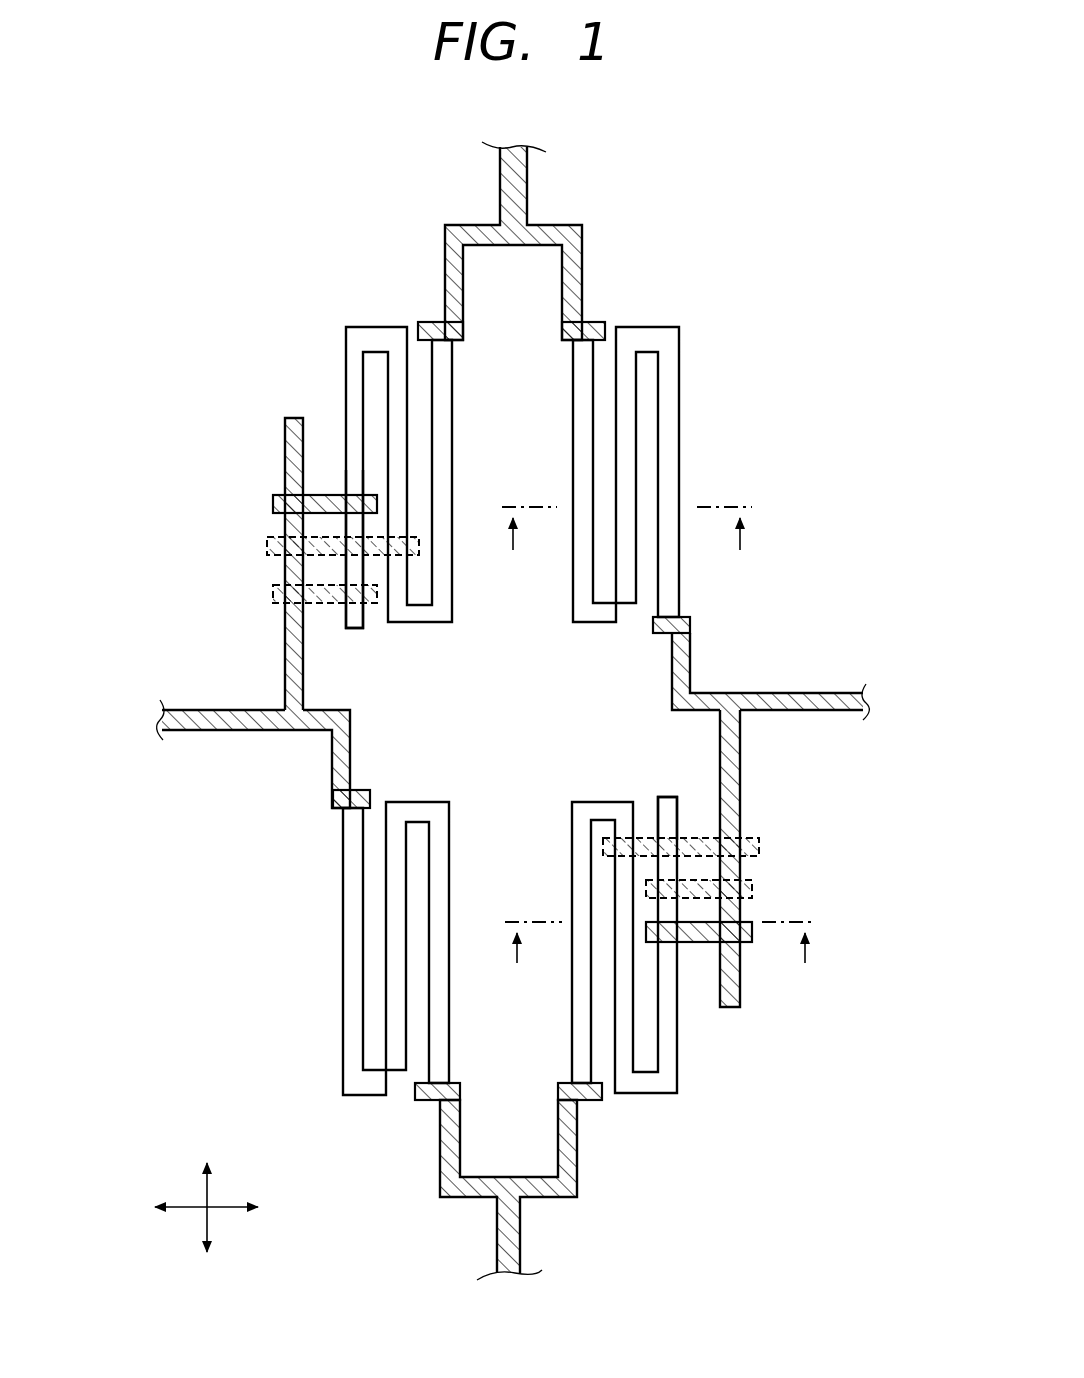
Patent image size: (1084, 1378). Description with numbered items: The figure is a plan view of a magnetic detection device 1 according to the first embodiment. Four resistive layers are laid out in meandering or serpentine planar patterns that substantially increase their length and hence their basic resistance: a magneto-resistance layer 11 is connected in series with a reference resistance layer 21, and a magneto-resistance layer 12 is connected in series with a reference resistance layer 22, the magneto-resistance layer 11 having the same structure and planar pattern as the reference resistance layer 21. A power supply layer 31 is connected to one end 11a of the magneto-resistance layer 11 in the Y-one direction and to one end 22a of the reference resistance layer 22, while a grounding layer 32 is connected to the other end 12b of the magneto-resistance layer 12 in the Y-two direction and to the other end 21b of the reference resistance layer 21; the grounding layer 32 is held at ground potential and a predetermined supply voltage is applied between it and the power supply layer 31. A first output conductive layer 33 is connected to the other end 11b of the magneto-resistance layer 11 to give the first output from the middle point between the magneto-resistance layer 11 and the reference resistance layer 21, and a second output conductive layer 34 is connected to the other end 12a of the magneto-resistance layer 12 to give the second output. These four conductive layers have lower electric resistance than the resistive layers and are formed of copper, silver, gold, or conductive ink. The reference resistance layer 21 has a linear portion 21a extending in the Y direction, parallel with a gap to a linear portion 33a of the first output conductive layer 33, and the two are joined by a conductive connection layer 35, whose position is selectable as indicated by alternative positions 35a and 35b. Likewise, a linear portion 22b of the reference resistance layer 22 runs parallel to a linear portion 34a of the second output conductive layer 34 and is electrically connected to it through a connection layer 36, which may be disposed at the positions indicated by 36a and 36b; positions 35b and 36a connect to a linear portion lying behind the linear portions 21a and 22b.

The magnetic detection device 1 is at (656, 239).
The magneto-resistance layer 11 is at (643, 523).
The one end of the magneto-resistance layer 11a is at (567, 340).
The other end of the magneto-resistance layer 11b is at (662, 635).
The magneto-resistance layer 12 is at (352, 949).
The other end of the magneto-resistance layer 12a is at (358, 795).
The other end of the magneto-resistance layer 12b is at (432, 1100).
The reference resistance layer 21 is at (670, 948).
The linear portion 21a is at (666, 808).
The other end of the reference resistance layer 21b is at (586, 1100).
The reference resistance layer 22 is at (383, 475).
The one end of the reference resistance layer 22a is at (469, 341).
The linear portion 22b is at (357, 470).
The power supply layer 31 is at (549, 232).
The grounding layer 32 is at (580, 1186).
The first output conductive layer 33 is at (770, 813).
The linear portion 33a is at (742, 758).
The second output conductive layer 34 is at (253, 614).
The linear portion 34a is at (285, 462).
The connection layer 35 is at (695, 944).
The position of the connection layer 35a is at (753, 889).
The position of the connection layer 35b is at (760, 848).
The connection layer 36 is at (273, 503).
The position of the connection layer 36a is at (267, 545).
The position of the connection layer 36b is at (273, 597).